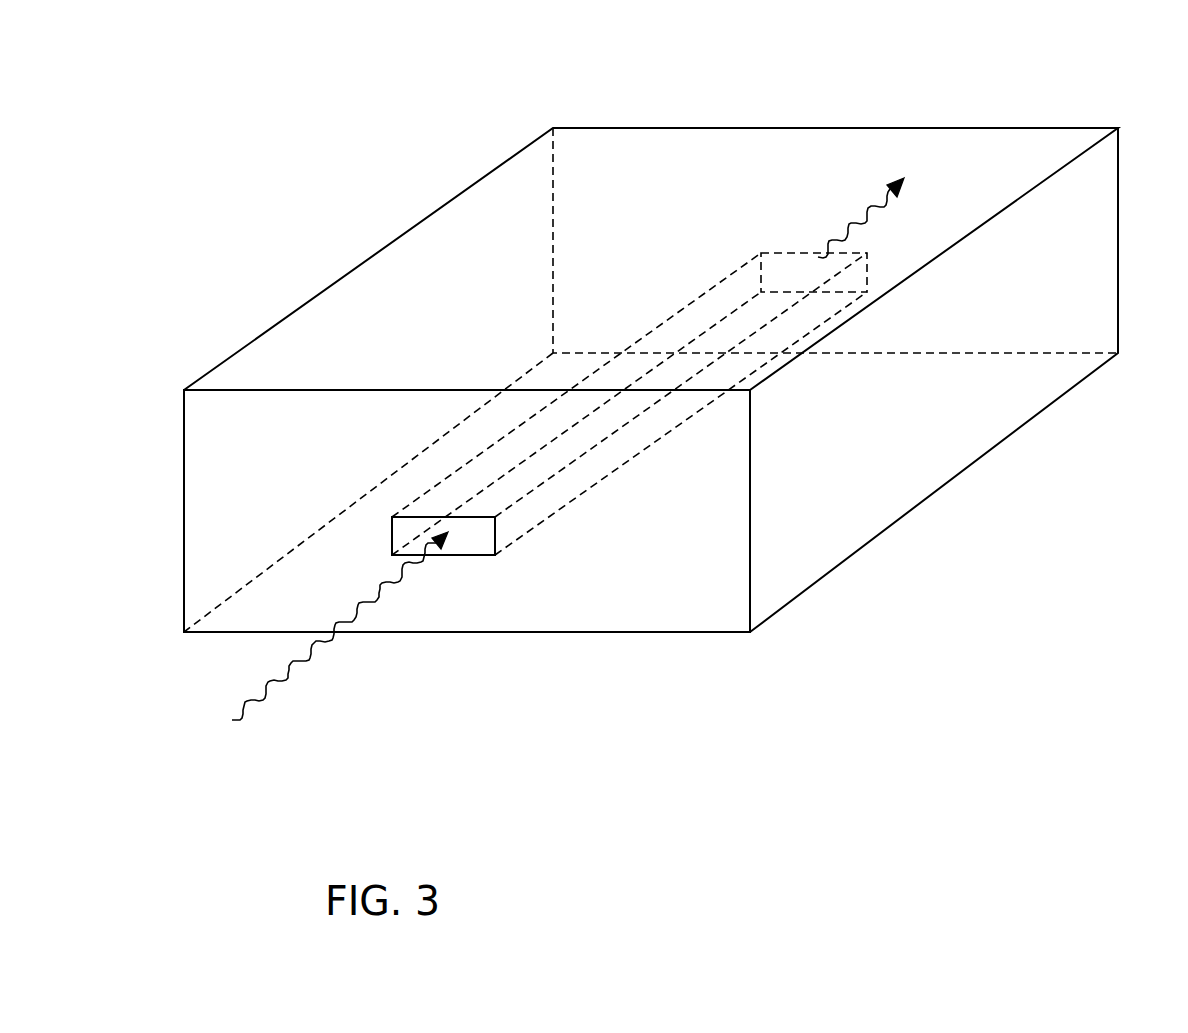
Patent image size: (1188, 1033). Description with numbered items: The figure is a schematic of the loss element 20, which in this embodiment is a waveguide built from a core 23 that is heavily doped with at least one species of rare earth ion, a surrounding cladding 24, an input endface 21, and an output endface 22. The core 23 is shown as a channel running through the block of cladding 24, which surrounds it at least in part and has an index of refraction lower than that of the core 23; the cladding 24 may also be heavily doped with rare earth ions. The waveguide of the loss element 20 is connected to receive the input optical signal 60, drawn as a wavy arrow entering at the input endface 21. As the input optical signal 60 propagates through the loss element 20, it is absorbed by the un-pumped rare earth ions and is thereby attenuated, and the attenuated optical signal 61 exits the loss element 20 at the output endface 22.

The loss element 20 is at (684, 424).
The input endface 21 is at (485, 543).
The output endface 22 is at (787, 265).
The core 23 is at (645, 432).
The cladding 24 is at (495, 228).
The input optical signal 60 is at (300, 672).
The attenuated optical signal 61 is at (855, 227).